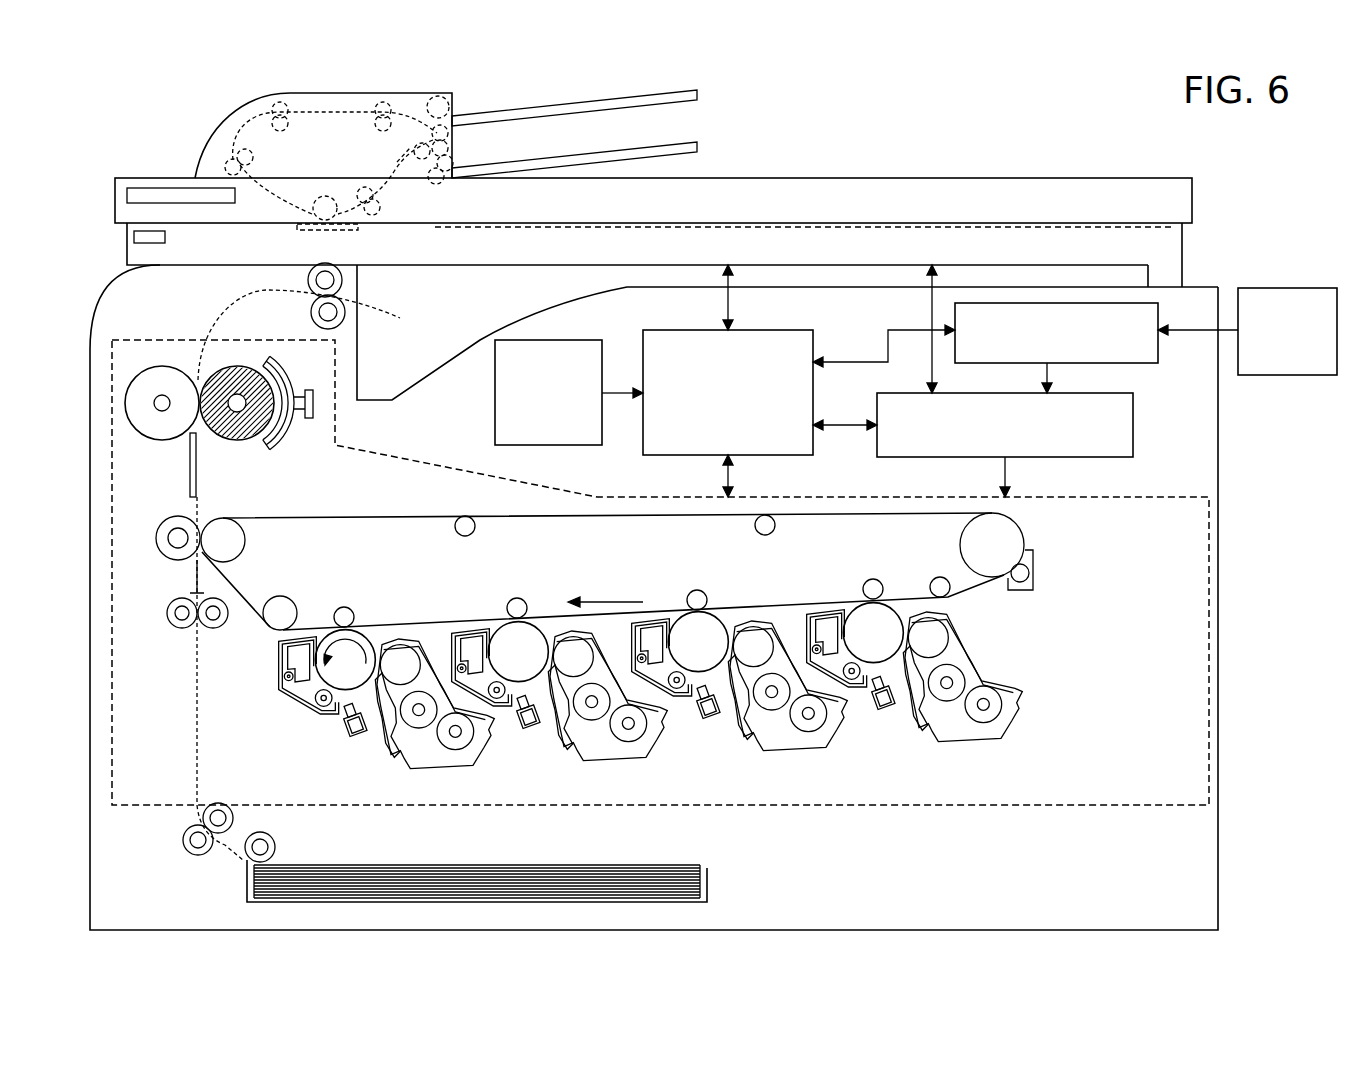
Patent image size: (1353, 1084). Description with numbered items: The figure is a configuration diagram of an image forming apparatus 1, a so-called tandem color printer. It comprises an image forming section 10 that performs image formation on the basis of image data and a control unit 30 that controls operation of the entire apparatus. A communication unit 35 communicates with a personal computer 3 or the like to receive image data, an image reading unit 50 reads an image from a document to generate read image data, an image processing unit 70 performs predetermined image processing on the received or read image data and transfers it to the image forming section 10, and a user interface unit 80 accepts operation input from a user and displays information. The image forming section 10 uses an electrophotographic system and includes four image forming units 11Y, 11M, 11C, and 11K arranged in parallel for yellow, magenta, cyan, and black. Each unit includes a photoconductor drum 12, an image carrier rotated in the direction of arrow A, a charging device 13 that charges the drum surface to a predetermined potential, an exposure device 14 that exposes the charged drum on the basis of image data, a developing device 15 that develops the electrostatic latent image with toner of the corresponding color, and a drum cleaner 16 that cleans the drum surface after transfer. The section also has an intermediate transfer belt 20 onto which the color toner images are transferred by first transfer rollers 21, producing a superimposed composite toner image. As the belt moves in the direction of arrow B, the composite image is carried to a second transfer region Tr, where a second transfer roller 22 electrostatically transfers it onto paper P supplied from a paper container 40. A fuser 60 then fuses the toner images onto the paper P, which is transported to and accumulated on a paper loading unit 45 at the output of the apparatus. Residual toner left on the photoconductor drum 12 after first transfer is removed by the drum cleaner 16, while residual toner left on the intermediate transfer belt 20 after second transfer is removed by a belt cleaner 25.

The image forming apparatus 1 is at (810, 124).
The personal computer 3 is at (1290, 275).
The image forming section 10 is at (1080, 808).
The image forming unit 11K is at (389, 689).
The image forming unit 11C is at (670, 745).
The image forming unit 11M is at (850, 740).
The image forming unit 11Y is at (1022, 730).
The photoconductor drum 12 is at (327, 636).
The charging device 13 is at (322, 710).
The exposure device 14 is at (360, 748).
The developing device 15 is at (497, 757).
The drum cleaner 16 is at (285, 662).
The intermediate transfer belt 20 is at (405, 516).
The first transfer roller 21 is at (345, 606).
The second transfer roller 22 is at (172, 560).
The belt cleaner 25 is at (1040, 567).
The control unit 30 is at (643, 367).
The communication unit 35 is at (1160, 318).
The paper container 40 is at (479, 852).
The paper loading unit 45 is at (470, 338).
The image reading unit 50 is at (943, 172).
The fuser 60 is at (298, 448).
The image processing unit 70 is at (1134, 432).
The user interface unit 80 is at (552, 340).
The second transfer region Tr is at (187, 513).
The paper P is at (628, 862).
The arrow A is at (345, 657).
The arrow B is at (605, 591).